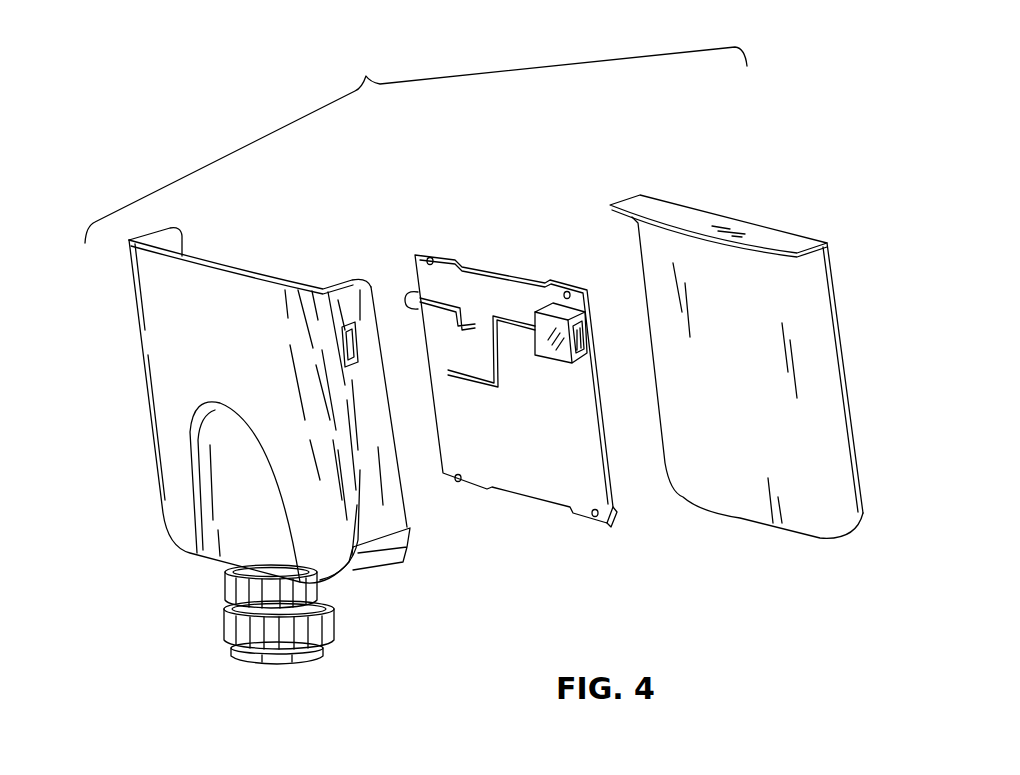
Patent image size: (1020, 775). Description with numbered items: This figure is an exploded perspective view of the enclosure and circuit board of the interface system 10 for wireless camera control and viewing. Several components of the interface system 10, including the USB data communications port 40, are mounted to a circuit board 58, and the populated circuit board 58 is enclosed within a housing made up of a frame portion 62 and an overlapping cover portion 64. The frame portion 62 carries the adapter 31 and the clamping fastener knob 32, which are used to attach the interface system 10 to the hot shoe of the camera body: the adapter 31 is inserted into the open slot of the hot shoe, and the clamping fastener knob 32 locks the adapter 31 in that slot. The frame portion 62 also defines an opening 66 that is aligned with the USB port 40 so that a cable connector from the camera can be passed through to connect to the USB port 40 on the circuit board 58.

The interface system 10 is at (416, 145).
The frame portion 62 is at (162, 356).
The opening 66 is at (352, 324).
The circuit board 58 is at (525, 480).
The USB data communications port 40 is at (592, 323).
The cover portion 64 is at (833, 290).
The clamping fastener knob 32 is at (223, 608).
The adapter 31 is at (240, 652).